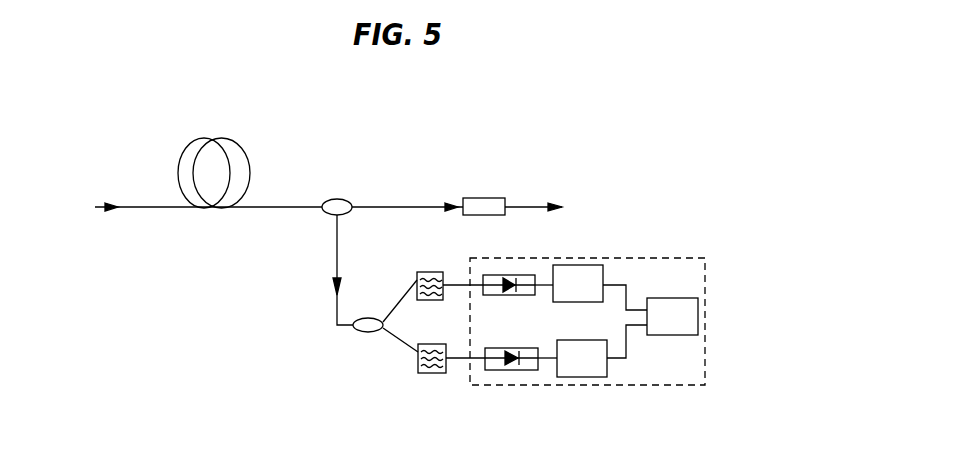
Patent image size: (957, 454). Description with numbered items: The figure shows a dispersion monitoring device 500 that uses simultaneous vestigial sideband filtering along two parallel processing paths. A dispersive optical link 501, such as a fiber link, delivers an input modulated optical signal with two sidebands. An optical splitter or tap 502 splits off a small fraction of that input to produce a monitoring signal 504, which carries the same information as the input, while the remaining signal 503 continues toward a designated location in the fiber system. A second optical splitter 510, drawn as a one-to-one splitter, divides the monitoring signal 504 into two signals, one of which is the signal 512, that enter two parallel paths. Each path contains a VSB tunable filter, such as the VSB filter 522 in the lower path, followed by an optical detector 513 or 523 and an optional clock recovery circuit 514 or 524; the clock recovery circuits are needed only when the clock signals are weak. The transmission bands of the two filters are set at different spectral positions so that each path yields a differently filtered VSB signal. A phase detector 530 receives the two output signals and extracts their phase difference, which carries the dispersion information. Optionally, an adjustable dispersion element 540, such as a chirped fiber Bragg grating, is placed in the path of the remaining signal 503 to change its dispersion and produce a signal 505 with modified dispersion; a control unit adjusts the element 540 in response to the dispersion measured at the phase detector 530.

The dispersion monitoring device 500 is at (401, 104).
The dispersive optical link 501 is at (211, 140).
The optical splitter (tap) 502 is at (322, 201).
The remaining signal 503 is at (392, 204).
The monitoring signal 504 is at (334, 242).
The signal with modified dispersion 505 is at (548, 198).
The optical splitter 510 is at (353, 328).
The split signal 512 is at (440, 282).
The optical detector 513 is at (507, 275).
The clock recovery circuit 514 is at (575, 265).
The VSB filter 522 is at (432, 373).
The optical detector 523 is at (515, 370).
The clock recovery circuit 524 is at (608, 368).
The phase detector 530 is at (660, 297).
The adjustable dispersion element 540 is at (483, 198).